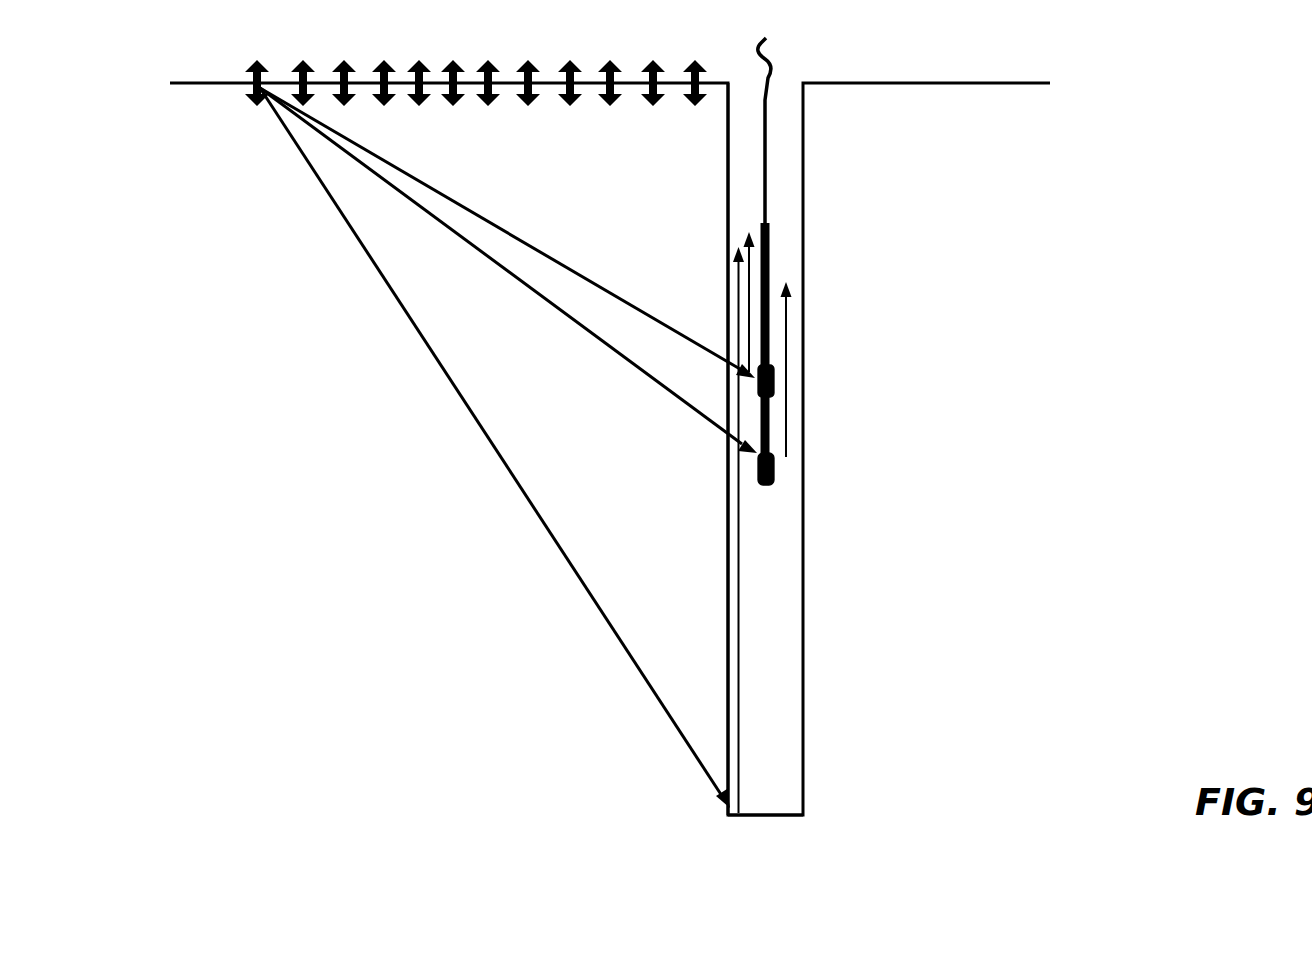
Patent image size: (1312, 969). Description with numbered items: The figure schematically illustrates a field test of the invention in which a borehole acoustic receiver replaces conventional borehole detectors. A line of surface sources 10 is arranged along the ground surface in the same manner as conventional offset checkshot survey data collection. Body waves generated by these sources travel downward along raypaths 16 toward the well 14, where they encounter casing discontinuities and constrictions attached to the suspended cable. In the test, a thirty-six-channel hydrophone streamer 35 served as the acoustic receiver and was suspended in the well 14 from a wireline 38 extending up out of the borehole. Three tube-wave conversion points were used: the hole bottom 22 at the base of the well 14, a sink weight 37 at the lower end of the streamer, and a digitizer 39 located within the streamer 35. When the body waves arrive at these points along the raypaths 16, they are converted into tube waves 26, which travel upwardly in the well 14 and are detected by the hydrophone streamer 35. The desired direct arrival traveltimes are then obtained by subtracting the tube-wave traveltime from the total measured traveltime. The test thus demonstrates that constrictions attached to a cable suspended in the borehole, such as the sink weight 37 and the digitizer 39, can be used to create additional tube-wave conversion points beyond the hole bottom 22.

The surface sources 10 is at (387, 61).
The well 14 is at (728, 169).
The raypaths 16 is at (513, 240).
The hole bottom 22 is at (782, 813).
The tube waves 26 is at (749, 320).
The hydrophone streamer 35 is at (771, 259).
The sink weight 37 is at (775, 479).
The wireline 38 is at (776, 62).
The digitizer 39 is at (775, 383).